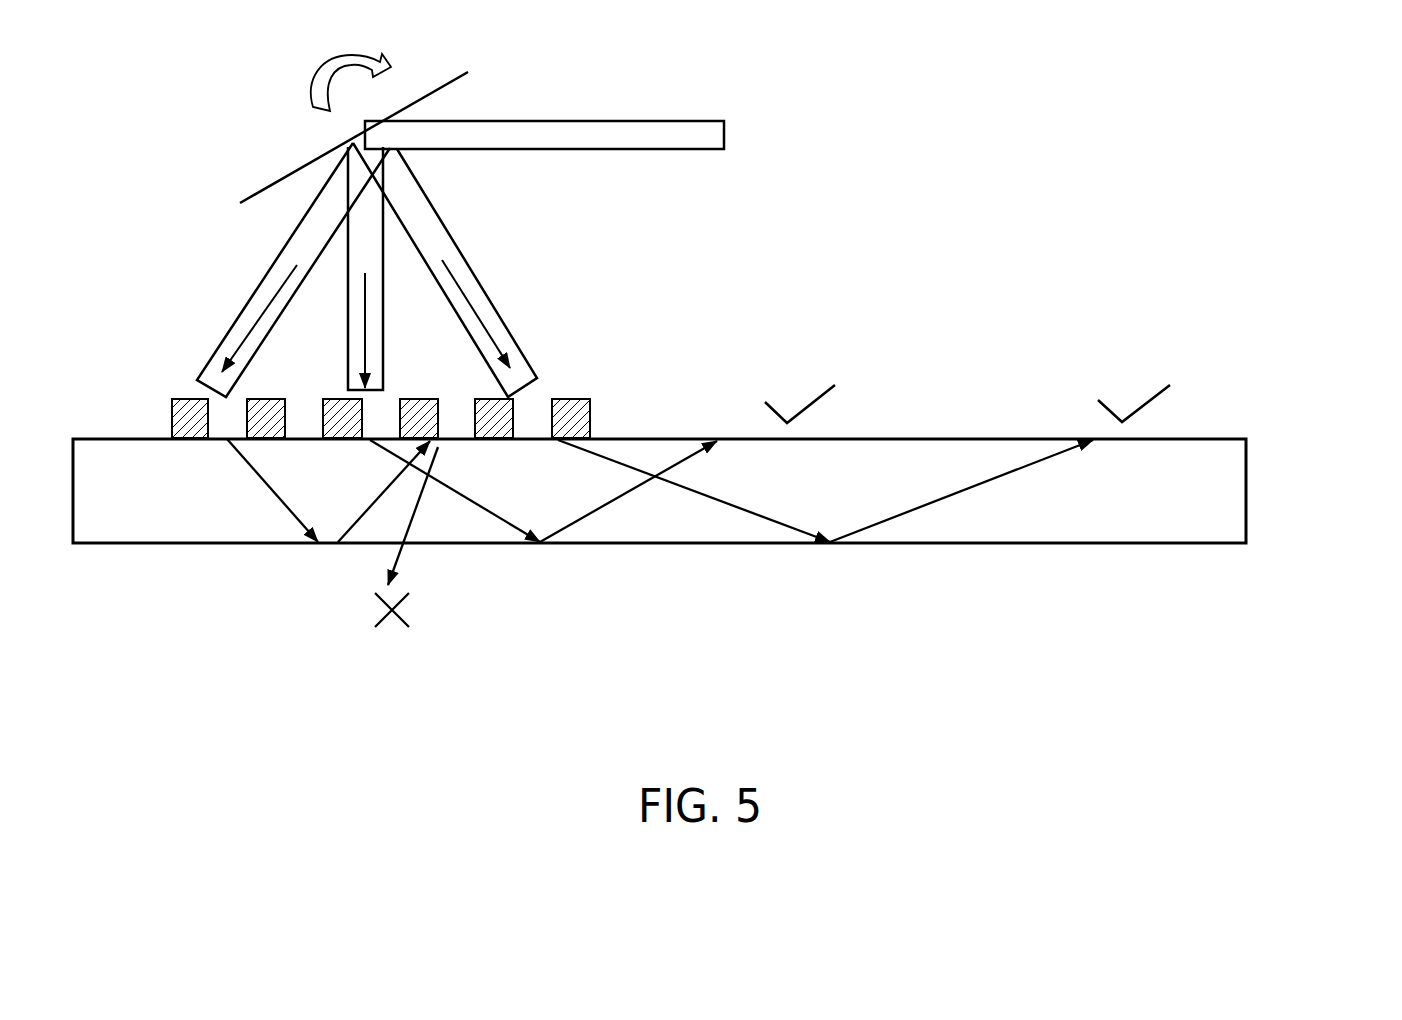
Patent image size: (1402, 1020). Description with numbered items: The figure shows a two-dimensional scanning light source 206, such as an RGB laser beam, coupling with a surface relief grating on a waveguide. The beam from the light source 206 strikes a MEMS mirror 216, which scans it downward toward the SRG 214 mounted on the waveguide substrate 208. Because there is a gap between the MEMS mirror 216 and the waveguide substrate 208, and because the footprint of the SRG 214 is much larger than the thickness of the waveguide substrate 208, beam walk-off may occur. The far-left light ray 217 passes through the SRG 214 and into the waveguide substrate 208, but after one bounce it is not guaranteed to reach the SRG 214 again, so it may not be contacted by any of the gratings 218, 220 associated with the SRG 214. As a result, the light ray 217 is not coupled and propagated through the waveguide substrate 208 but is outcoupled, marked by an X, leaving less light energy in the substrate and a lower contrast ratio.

The 2D scanning light source 206 is at (743, 135).
The waveguide substrate 208 is at (1252, 513).
The SRG 214 is at (310, 384).
The MEMS mirror 216 is at (268, 189).
The light ray 217 is at (293, 265).
The grating 218 is at (420, 397).
The grating 220 is at (572, 398).